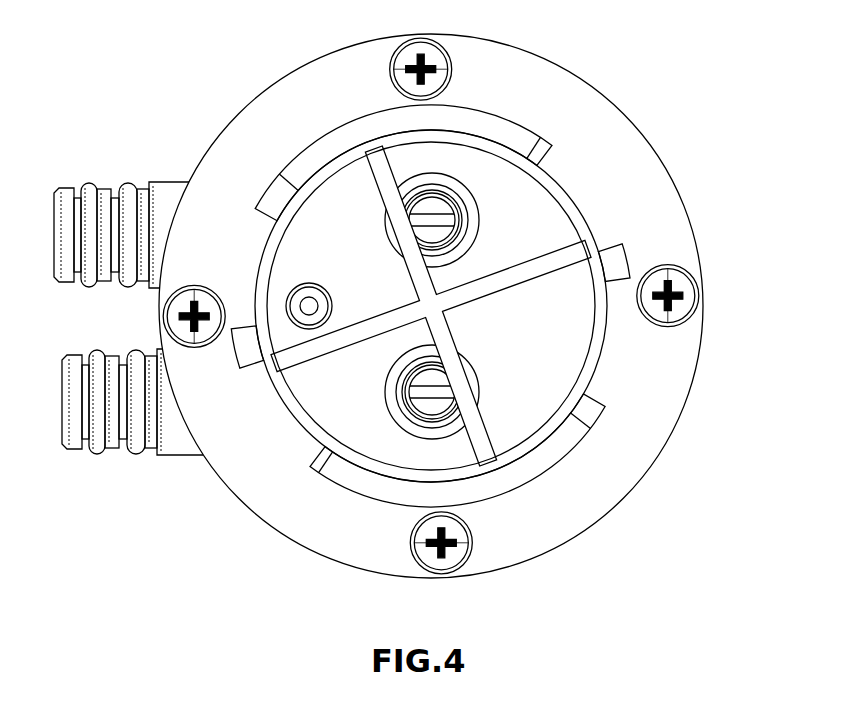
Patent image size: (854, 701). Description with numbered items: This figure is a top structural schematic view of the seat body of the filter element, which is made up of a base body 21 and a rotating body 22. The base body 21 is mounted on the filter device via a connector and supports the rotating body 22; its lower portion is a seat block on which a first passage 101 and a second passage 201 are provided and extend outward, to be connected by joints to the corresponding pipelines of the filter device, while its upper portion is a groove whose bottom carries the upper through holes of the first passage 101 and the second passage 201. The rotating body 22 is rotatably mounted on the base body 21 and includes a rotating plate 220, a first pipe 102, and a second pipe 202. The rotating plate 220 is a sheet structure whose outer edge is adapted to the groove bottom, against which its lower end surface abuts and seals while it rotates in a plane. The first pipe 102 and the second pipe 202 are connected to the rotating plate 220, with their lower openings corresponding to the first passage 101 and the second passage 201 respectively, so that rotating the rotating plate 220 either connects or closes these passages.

The base body 21 is at (618, 132).
The rotating body 22 is at (580, 347).
The rotating plate 220 is at (367, 440).
The second passage 201 is at (90, 188).
The first passage 101 is at (102, 445).
The second pipe 202 is at (437, 207).
The first pipe 102 is at (447, 407).